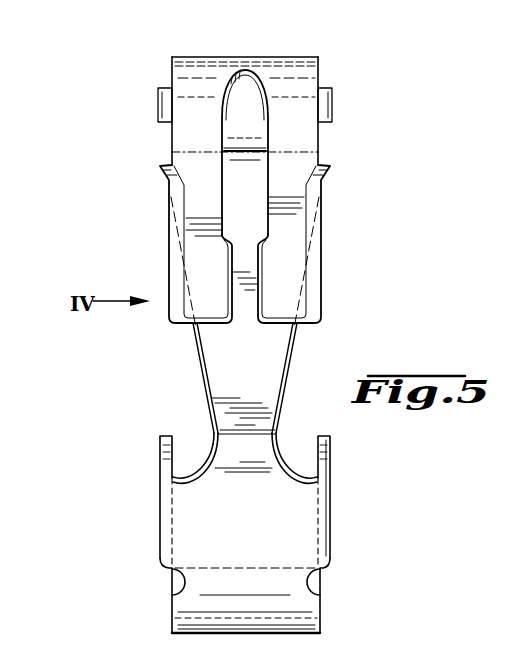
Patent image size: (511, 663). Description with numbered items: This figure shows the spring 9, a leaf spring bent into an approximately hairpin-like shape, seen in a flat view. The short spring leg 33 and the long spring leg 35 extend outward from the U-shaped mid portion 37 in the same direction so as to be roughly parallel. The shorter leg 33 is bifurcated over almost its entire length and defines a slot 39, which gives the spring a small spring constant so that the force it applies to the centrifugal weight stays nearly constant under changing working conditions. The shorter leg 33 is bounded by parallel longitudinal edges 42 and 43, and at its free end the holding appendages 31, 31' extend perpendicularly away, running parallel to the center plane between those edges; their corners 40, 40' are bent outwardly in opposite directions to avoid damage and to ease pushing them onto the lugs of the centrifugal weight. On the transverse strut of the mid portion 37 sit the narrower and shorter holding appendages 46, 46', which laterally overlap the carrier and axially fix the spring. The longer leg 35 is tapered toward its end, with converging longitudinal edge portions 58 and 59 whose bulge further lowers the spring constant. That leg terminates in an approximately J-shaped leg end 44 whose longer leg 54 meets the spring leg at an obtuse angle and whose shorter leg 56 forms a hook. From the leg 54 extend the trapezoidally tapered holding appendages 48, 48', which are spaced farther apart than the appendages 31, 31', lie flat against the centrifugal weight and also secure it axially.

The spring 9 is at (217, 54).
The U-shaped mid portion 37 is at (246, 117).
The holding appendage 46 is at (142, 91).
The holding appendage 46' is at (346, 91).
The longitudinal edge 43 is at (171, 137).
The short spring leg 33 is at (200, 135).
The longitudinal edge 42 is at (320, 136).
The slot 39 is at (266, 181).
The corner 40 is at (147, 186).
The corner 40' is at (342, 187).
The holding appendage 31 is at (188, 244).
The holding appendage 31' is at (316, 244).
The long spring leg 35 is at (216, 343).
The longitudinal edge portion 58 is at (290, 359).
The longitudinal edge portion 59 is at (208, 397).
The holding appendage 48 is at (164, 495).
The holding appendage 48' is at (333, 495).
The J-shaped leg end 44 is at (193, 577).
The longer leg of the leg end 54 is at (304, 540).
The shorter leg of the leg end 56 is at (319, 585).